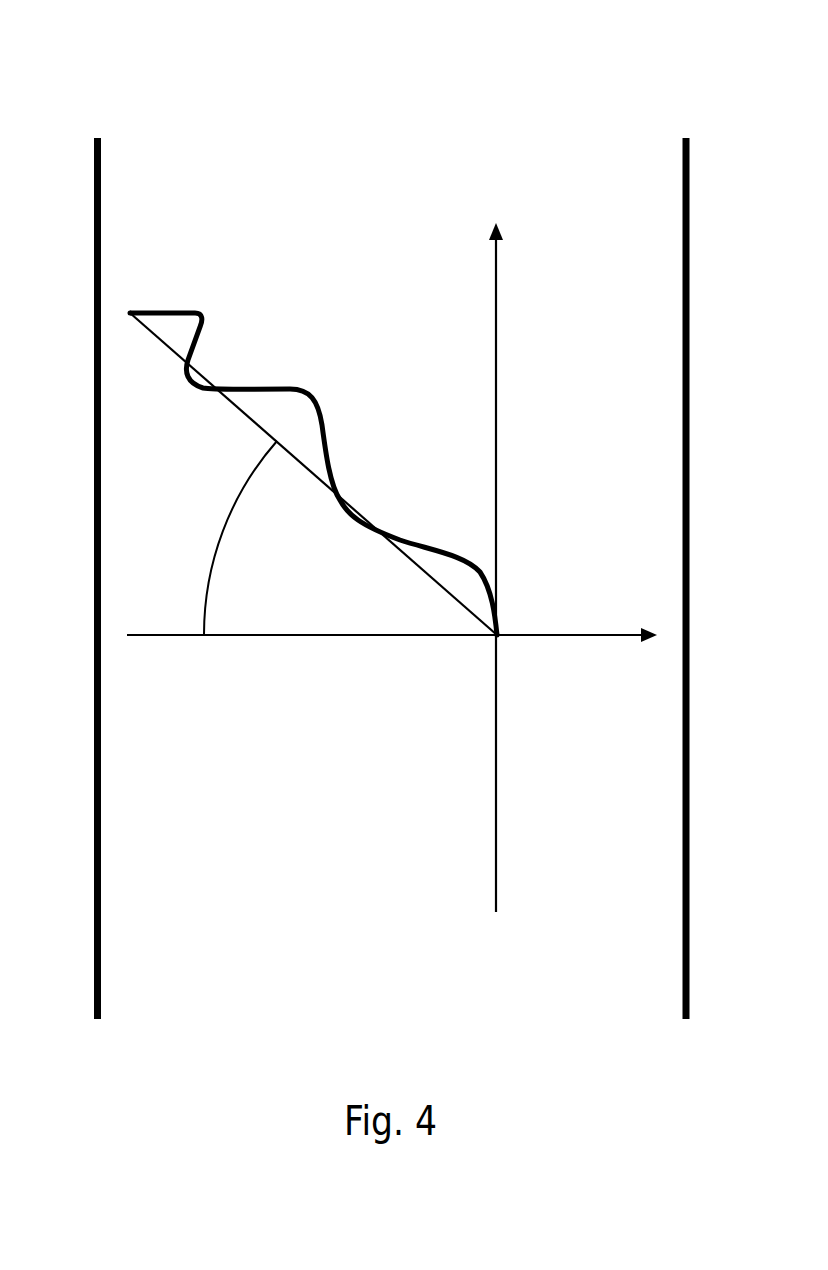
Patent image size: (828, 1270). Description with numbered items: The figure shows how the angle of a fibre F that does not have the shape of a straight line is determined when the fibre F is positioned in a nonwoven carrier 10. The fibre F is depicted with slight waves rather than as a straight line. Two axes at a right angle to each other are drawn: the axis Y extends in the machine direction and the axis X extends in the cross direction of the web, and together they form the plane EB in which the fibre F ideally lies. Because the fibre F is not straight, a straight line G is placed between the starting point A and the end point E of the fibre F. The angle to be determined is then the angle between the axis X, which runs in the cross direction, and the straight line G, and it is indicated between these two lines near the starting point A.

The nonwoven carrier 10 is at (255, 228).
The end point E is at (130, 313).
The fibre F is at (295, 388).
The straight line G is at (243, 410).
The starting point A is at (497, 635).
The axis X is at (392, 656).
The axis Y is at (519, 563).
The plane EB is at (290, 946).